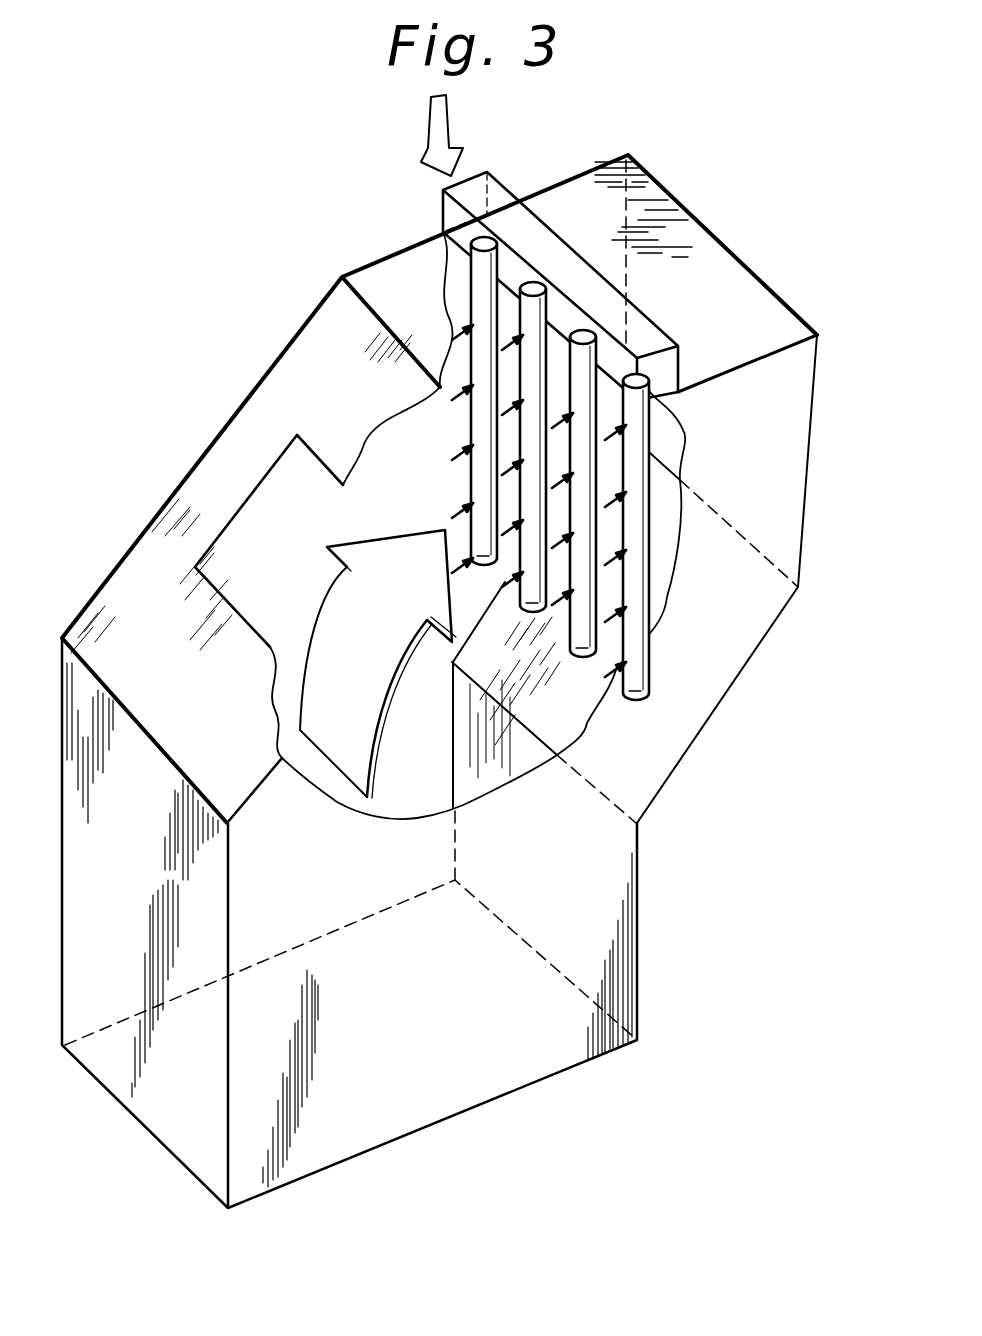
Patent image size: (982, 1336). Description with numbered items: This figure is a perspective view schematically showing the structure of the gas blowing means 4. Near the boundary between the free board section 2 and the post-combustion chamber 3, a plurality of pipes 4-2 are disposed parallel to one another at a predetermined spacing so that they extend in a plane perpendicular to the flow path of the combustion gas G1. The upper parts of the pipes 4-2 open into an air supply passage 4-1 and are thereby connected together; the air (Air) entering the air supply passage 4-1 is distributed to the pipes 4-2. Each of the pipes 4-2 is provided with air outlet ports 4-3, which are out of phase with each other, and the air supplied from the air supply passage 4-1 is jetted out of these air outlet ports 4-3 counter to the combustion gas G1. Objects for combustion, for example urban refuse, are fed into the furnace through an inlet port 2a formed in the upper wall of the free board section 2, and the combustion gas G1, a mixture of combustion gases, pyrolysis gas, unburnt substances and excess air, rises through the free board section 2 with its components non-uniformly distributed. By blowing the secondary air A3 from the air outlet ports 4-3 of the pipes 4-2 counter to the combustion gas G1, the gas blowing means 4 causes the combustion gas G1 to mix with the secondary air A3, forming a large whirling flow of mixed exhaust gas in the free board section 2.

The free board section 2 is at (112, 983).
The inlet port 2a is at (263, 548).
The post-combustion chamber 3 is at (772, 453).
The gas blowing means 4 is at (507, 409).
The air supply passage 4-1 is at (560, 250).
The pipes 4-2 is at (520, 370).
The air outlet ports 4-3 is at (480, 470).
The secondary air A3 is at (614, 440).
The combustion gas G1 is at (338, 623).
The air Air is at (440, 114).